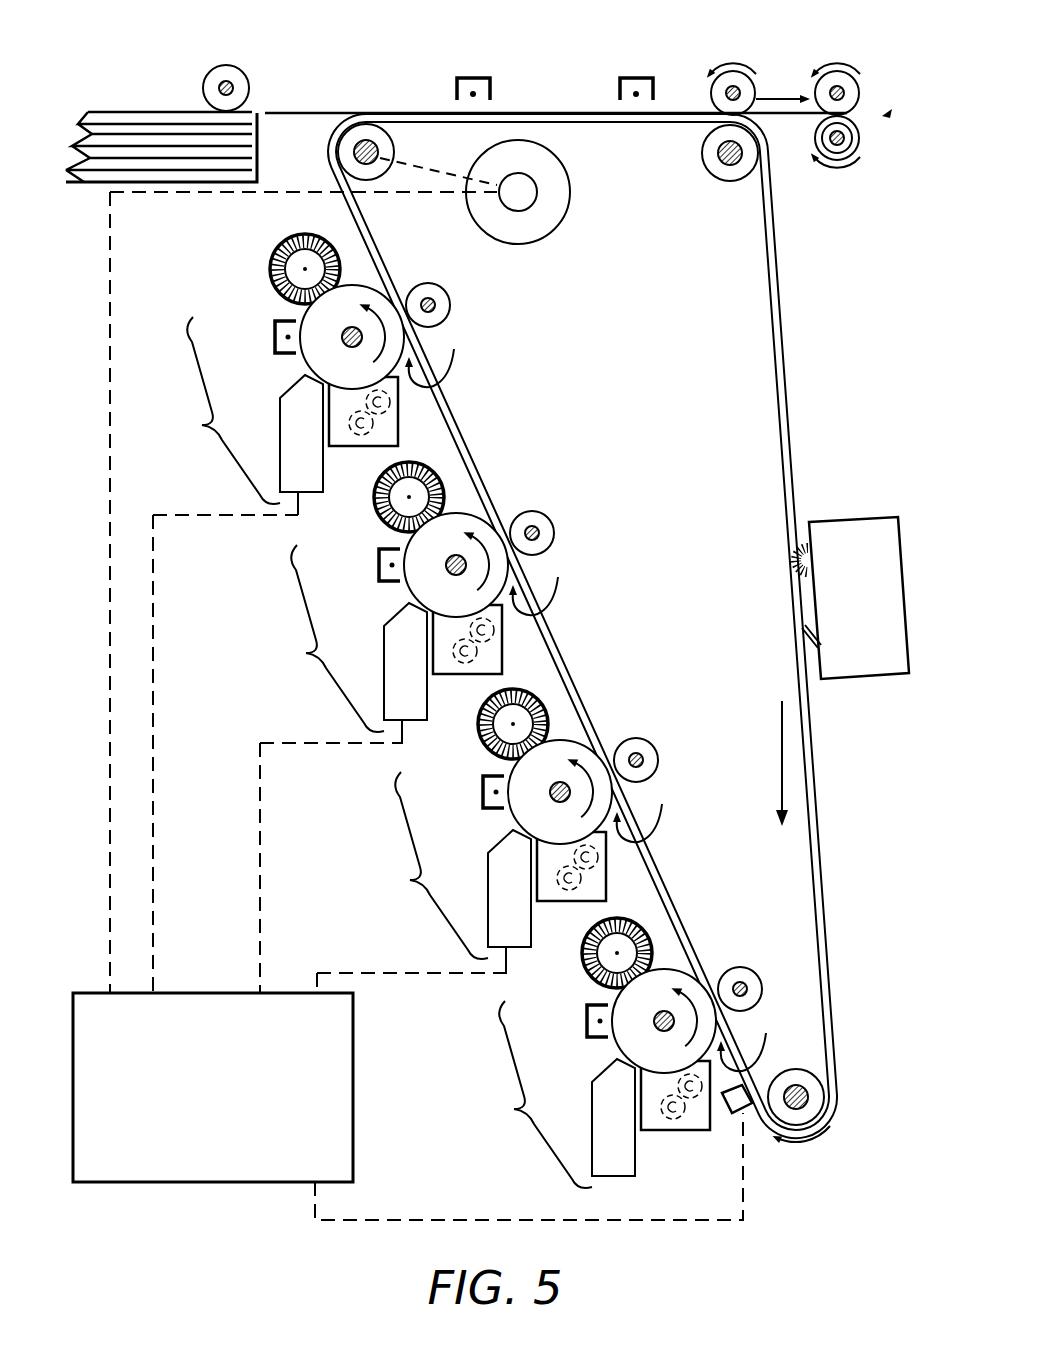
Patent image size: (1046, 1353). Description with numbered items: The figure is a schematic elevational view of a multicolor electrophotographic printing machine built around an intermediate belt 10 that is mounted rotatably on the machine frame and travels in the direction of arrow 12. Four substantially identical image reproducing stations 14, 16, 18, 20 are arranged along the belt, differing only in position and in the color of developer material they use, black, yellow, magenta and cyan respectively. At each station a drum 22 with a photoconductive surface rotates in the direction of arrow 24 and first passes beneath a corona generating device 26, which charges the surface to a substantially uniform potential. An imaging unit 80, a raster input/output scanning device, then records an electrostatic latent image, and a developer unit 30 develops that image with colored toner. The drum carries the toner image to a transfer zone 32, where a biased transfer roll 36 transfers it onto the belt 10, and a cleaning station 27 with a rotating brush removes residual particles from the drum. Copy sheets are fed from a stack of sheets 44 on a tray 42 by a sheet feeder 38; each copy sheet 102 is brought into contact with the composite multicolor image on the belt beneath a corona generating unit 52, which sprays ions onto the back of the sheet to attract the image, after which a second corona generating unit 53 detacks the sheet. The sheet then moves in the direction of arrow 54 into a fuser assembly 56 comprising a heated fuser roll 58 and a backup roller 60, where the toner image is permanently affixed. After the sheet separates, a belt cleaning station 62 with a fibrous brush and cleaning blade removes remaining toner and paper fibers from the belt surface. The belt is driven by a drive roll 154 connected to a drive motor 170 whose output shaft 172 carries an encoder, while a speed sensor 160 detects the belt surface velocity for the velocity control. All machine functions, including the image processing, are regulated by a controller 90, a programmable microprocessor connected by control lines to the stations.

The intermediate belt 10 is at (822, 892).
The arrow 12 is at (783, 752).
The image reproducing station 14 is at (226, 410).
The image reproducing station 16 is at (330, 638).
The image reproducing station 18 is at (434, 865).
The image reproducing station 20 is at (538, 1094).
The drum 22 is at (518, 644).
The arrow 24 is at (556, 645).
The corona generating device 26 is at (406, 679).
The cleaning station 27 is at (428, 611).
The developer unit 30 is at (519, 780).
The transfer zone 32 is at (596, 700).
The biased transfer roll 36 is at (605, 629).
The sheet feeder 38 is at (228, 64).
The tray 42 is at (258, 172).
The stack of sheets 44 is at (147, 118).
The corona generating unit 52 is at (475, 77).
The second corona generating unit 53 is at (637, 77).
The arrow 54 is at (765, 98).
The fuser assembly 56 is at (888, 113).
The heated fuser roll 58 is at (853, 147).
The backup roller 60 is at (858, 92).
The belt cleaning unit 62 is at (853, 526).
The imaging unit 80 is at (438, 775).
The controller 90 is at (212, 1183).
The copy sheet 102 is at (310, 112).
The drive roller 154 is at (808, 1100).
The speed sensor 160 is at (738, 1114).
The drive motor 170 is at (542, 220).
The output shaft 172 is at (523, 185).